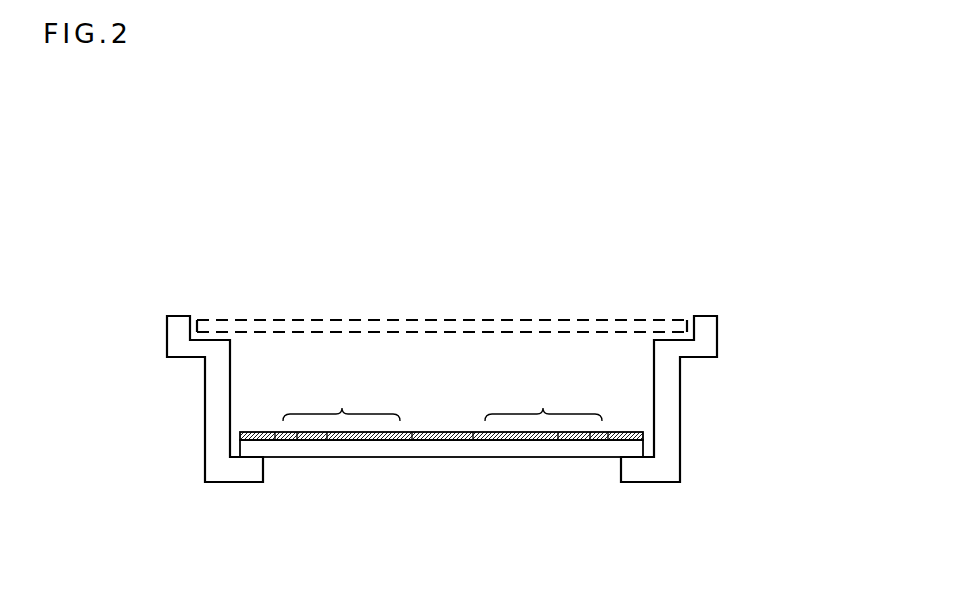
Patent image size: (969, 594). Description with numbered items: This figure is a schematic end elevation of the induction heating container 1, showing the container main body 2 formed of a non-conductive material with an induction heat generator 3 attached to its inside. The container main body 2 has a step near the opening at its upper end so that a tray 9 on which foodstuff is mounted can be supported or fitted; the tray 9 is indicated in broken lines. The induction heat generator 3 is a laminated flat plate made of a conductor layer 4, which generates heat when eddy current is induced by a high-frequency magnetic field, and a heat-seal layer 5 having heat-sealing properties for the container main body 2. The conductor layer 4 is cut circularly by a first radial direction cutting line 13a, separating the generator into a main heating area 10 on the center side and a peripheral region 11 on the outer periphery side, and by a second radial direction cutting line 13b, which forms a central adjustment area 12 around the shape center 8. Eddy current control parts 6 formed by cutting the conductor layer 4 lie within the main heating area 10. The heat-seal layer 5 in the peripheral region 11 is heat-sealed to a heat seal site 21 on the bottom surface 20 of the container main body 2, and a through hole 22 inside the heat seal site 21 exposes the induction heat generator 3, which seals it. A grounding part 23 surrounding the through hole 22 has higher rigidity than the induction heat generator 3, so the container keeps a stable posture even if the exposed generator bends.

The induction heating container 1 is at (339, 175).
The container main body 2 is at (178, 341).
The induction heat generator 3 is at (486, 398).
The conductor layer 4 is at (643, 435).
The heat-seal layer 5 is at (632, 448).
The eddy current control part 6 is at (297, 440).
The shape center 8 is at (443, 440).
The tray 9 is at (667, 320).
The main heating area 10 is at (342, 408).
The peripheral region 11 is at (260, 431).
The central adjustment area 12 is at (443, 431).
The first radial direction cutting line 13a is at (278, 431).
The second radial direction cutting line 13b is at (412, 431).
The bottom surface 20 is at (237, 467).
The heat seal site 21 is at (253, 457).
The through hole 22 is at (265, 468).
The grounding part 23 is at (233, 482).